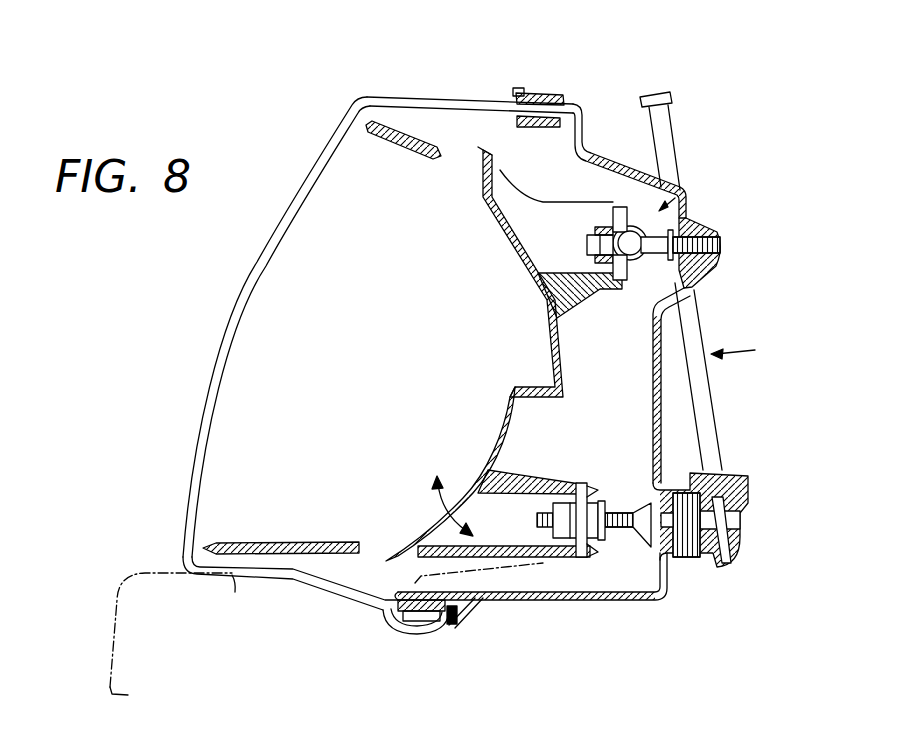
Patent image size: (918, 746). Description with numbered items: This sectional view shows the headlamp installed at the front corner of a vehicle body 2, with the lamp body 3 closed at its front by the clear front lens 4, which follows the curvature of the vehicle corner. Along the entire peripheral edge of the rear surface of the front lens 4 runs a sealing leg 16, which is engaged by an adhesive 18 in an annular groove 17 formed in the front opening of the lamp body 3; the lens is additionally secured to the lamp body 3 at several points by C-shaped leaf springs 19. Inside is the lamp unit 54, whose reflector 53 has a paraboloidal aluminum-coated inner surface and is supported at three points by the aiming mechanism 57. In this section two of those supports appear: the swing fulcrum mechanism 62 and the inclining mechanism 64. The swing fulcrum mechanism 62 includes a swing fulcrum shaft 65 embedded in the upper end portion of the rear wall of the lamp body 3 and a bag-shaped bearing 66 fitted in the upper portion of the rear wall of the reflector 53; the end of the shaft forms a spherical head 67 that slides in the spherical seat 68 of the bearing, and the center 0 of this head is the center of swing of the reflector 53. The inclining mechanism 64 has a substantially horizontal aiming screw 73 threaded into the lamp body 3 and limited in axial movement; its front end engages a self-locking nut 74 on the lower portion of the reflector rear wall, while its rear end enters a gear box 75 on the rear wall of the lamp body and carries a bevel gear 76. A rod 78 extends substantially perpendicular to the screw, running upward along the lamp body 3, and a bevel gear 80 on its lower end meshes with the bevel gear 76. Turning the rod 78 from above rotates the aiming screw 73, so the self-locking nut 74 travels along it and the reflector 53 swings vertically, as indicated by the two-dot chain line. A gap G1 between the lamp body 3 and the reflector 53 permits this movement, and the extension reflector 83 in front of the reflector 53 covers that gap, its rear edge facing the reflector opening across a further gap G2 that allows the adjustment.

The vehicle body 2 is at (118, 560).
The lamp body 3 is at (591, 601).
The front lens 4 is at (292, 197).
The sealing leg 16 is at (461, 98).
The annular groove 17 is at (515, 90).
The adhesive 18 is at (570, 101).
The C-shaped leaf spring 19 is at (409, 636).
The reflector 53 is at (505, 408).
The lamp unit 54 is at (415, 361).
The aiming mechanism 57 is at (758, 361).
The swing fulcrum mechanism 62 is at (688, 191).
The inclining mechanism 64 is at (684, 581).
The swing fulcrum shaft 65 is at (694, 291).
The bag-shaped bearing 66 is at (612, 228).
The spherical head 67 is at (631, 258).
The spherical seat 68 is at (637, 226).
The aiming screw 73 is at (622, 530).
The self-locking nut 74 is at (557, 525).
The bearing boss 75 is at (741, 531).
The bevel gear 76 is at (723, 562).
The rod 78 is at (706, 405).
The bevel gear 80 is at (749, 493).
The extension reflector 83 is at (426, 147).
The center of spherical head 0 is at (590, 229).
The gap G1 is at (503, 584).
The gap G2 is at (373, 547).